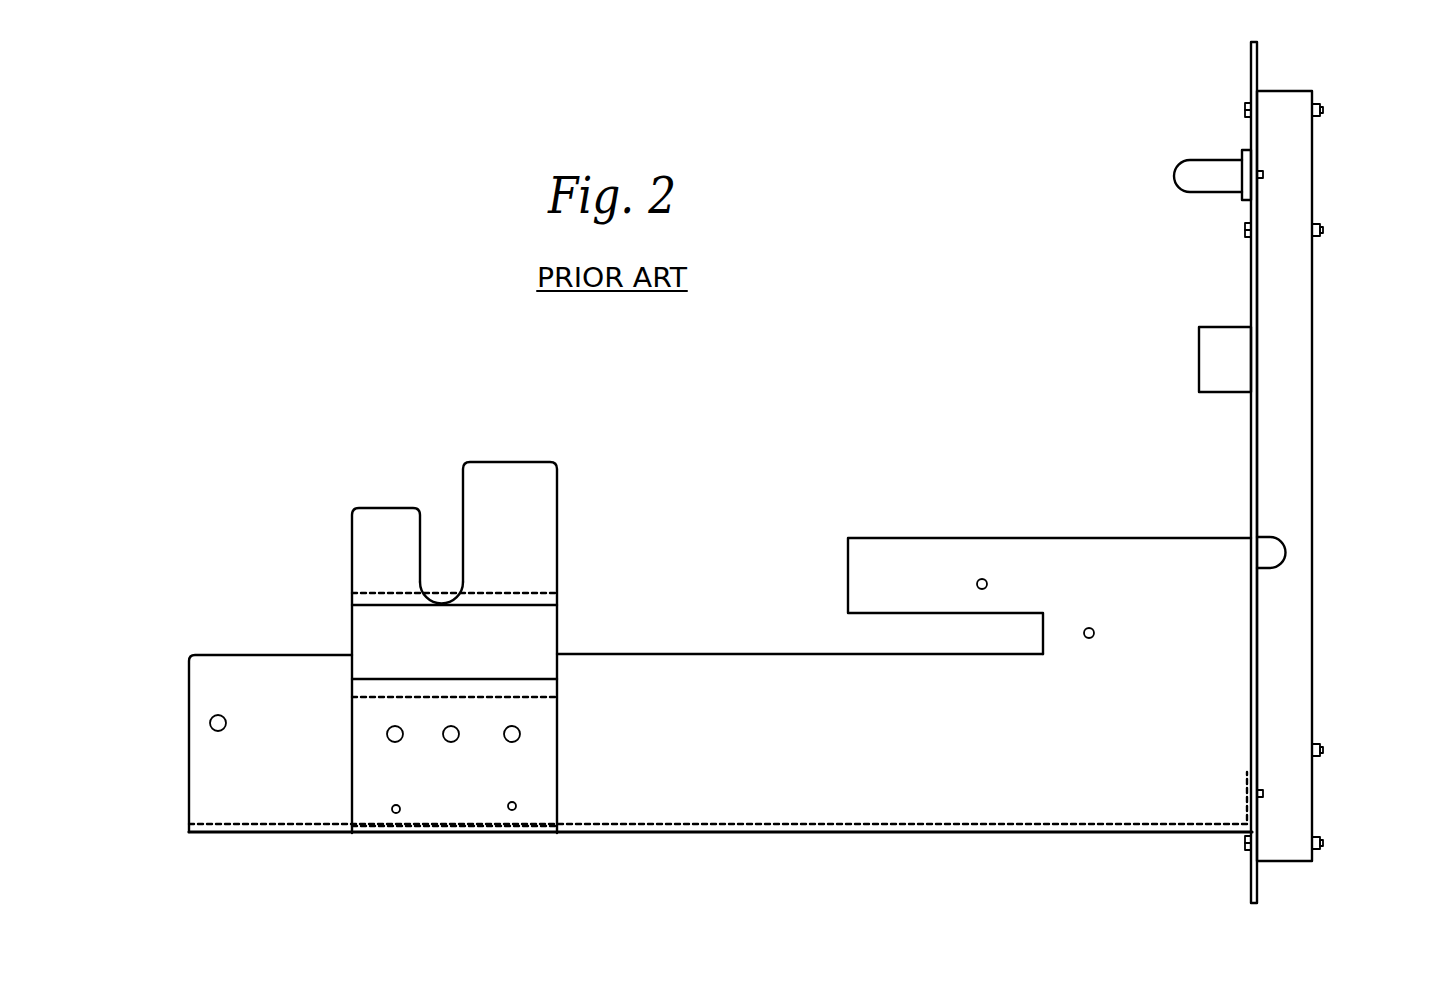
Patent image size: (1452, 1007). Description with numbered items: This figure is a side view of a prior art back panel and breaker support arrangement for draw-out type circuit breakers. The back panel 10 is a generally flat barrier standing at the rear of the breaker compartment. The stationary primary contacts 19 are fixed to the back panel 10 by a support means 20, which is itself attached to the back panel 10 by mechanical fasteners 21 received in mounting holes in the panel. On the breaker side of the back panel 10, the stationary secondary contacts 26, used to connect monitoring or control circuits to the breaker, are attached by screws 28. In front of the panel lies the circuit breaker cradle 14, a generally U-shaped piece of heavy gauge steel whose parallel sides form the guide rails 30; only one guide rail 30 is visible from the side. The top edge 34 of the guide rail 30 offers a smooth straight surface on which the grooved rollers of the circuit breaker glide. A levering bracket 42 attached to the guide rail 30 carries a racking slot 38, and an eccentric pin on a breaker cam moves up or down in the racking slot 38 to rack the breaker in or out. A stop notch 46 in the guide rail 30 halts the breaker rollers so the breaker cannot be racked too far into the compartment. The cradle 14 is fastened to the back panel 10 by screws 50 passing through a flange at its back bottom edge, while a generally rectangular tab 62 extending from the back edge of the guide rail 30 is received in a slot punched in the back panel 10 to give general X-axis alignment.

The back panel 10 is at (1251, 286).
The circuit breaker cradle 14 is at (270, 838).
The stationary primary contacts 19 is at (1208, 352).
The support means 20 is at (1300, 349).
The mechanical fasteners 21 is at (1323, 110).
The stationary secondary contacts 26 is at (1197, 168).
The screws 28 is at (1263, 174).
The guide rail 30 is at (987, 780).
The top edge 34 is at (707, 654).
The racking slot 38 is at (443, 530).
The levering bracket 42 is at (366, 640).
The stop notch 46 is at (1043, 627).
The screws 50 is at (1264, 793).
The tab 62 is at (1272, 553).